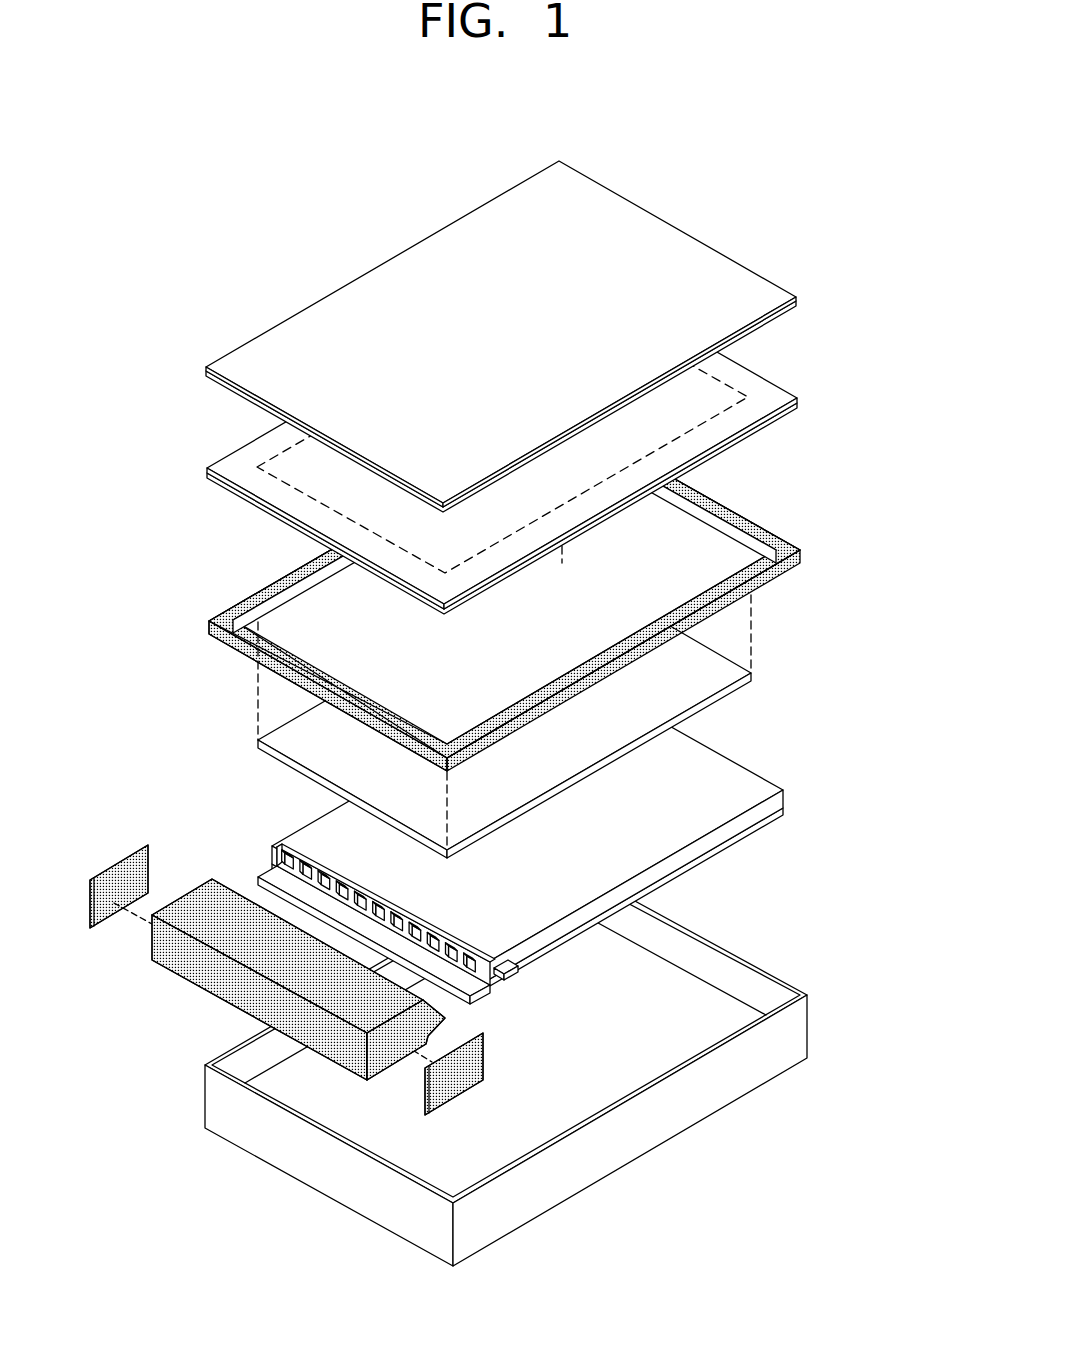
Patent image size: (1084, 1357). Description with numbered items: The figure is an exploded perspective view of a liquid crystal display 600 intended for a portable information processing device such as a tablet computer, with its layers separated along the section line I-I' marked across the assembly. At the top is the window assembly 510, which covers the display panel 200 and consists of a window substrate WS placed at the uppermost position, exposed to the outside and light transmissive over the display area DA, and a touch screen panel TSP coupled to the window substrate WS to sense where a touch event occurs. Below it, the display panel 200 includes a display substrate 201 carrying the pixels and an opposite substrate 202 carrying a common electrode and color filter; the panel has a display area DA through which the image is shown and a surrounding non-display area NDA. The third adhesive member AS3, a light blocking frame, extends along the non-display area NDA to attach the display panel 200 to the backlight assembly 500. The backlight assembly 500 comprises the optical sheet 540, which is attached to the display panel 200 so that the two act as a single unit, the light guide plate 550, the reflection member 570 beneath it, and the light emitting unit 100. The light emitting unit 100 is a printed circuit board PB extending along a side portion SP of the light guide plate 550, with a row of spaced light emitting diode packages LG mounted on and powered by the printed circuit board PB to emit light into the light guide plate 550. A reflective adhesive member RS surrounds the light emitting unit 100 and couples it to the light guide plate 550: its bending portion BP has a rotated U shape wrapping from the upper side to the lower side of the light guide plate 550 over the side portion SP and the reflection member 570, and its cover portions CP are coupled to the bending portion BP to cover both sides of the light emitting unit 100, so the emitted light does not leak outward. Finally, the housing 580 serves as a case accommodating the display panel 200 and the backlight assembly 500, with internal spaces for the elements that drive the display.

The liquid crystal display 600 is at (722, 178).
The window assembly 510 is at (570, 336).
The window substrate WS is at (757, 297).
The touch screen panel TSP is at (786, 310).
The display panel 200 is at (548, 438).
The opposite substrate 202 is at (784, 390).
The display substrate 201 is at (779, 416).
The non-display area NDA is at (242, 478).
The display area DA is at (306, 484).
The third adhesive member AS3 is at (766, 537).
The backlight assembly 500 is at (564, 806).
The optical sheet 540 is at (876, 827).
The light guide plate 550 is at (773, 803).
The reflection member 570 is at (780, 813).
The housing 580 is at (797, 1031).
The light emitting unit 100 is at (344, 883).
The light emitting diode packages LG is at (290, 846).
The printed circuit board PB is at (273, 878).
The side portion SP is at (497, 975).
The reflective adhesive member RS is at (275, 980).
The bending portion BP is at (291, 979).
The cover portions CP is at (110, 912).
The section line I is at (287, 1210).
The section line I' is at (779, 918).